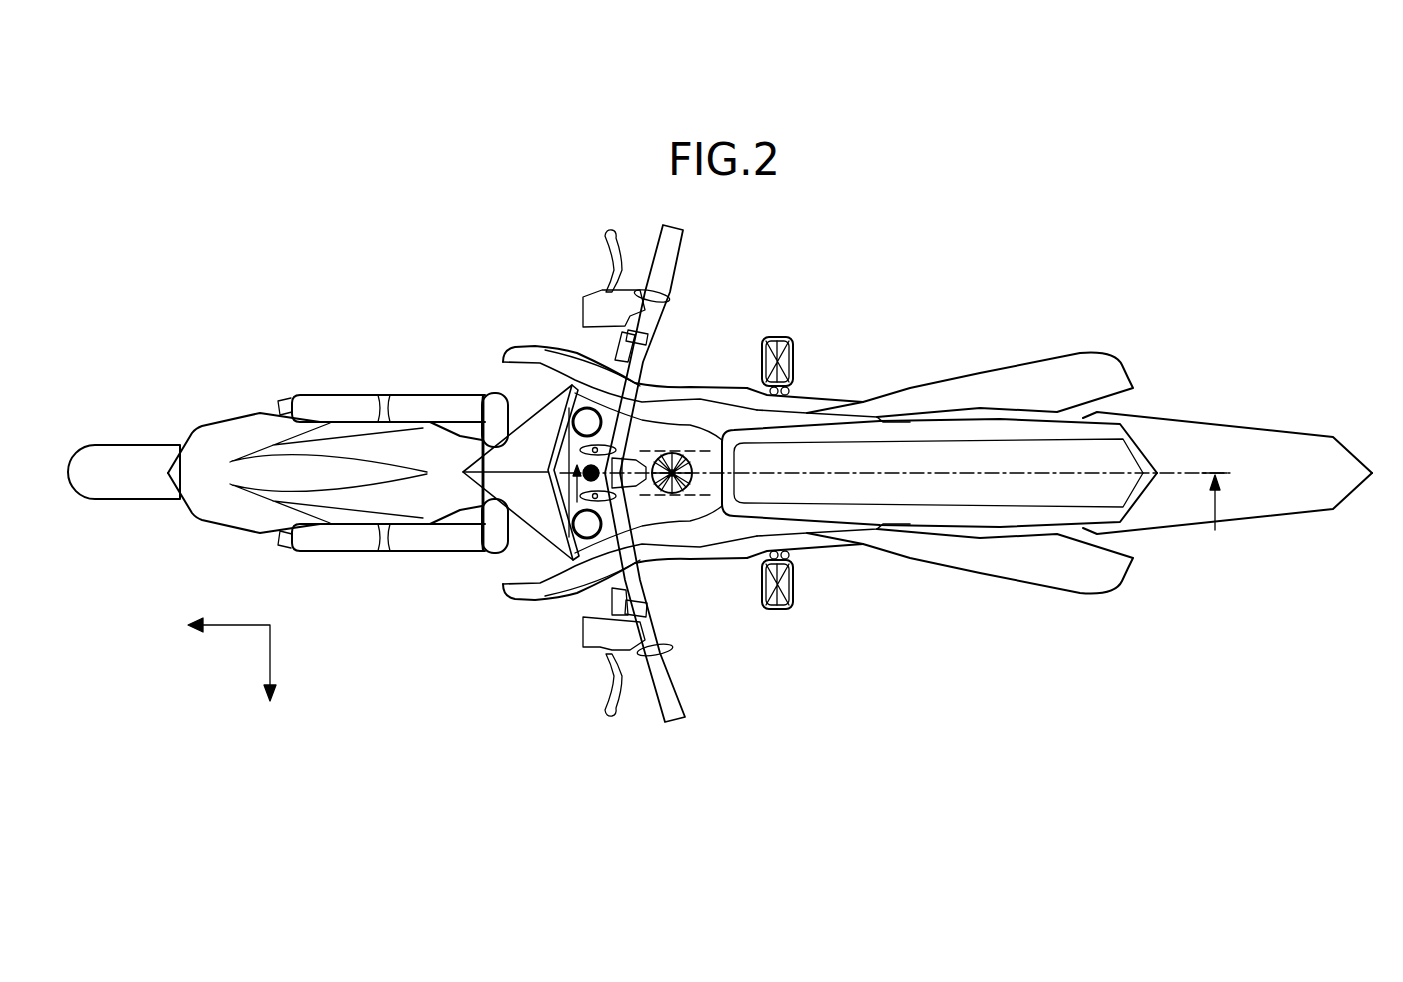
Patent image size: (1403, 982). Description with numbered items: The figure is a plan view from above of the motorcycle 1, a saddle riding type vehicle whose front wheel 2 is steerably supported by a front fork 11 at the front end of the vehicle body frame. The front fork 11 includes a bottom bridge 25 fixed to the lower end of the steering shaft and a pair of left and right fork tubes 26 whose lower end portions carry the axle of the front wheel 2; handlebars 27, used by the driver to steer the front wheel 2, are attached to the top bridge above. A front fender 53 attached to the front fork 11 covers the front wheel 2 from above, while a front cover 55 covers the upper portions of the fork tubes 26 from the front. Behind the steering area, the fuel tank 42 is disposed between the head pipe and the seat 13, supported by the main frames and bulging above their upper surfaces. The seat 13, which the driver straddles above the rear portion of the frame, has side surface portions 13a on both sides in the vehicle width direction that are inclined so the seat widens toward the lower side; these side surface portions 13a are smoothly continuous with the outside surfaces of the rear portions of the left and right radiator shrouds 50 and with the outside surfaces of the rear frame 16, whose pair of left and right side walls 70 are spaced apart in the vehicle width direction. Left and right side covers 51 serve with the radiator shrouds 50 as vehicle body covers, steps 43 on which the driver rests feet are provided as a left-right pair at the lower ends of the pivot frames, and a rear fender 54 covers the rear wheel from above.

The motorcycle 1 is at (276, 225).
The front wheel 2 is at (110, 445).
The front fork 11 is at (411, 391).
The seat 13 is at (895, 460).
The side surface portions 13a is at (935, 432).
The rear frame 16 is at (858, 552).
The bottom bridge 25 is at (490, 555).
The fork tubes 26 is at (448, 395).
The handlebars 27 is at (652, 597).
The fuel tank 42 is at (655, 437).
The steps 43 is at (790, 338).
The radiator shrouds 50 is at (566, 347).
The side covers 51 is at (1007, 363).
The front fender 53 is at (212, 443).
The rear fender 54 is at (1248, 443).
The front cover 55 is at (513, 452).
The side walls 70 is at (863, 403).